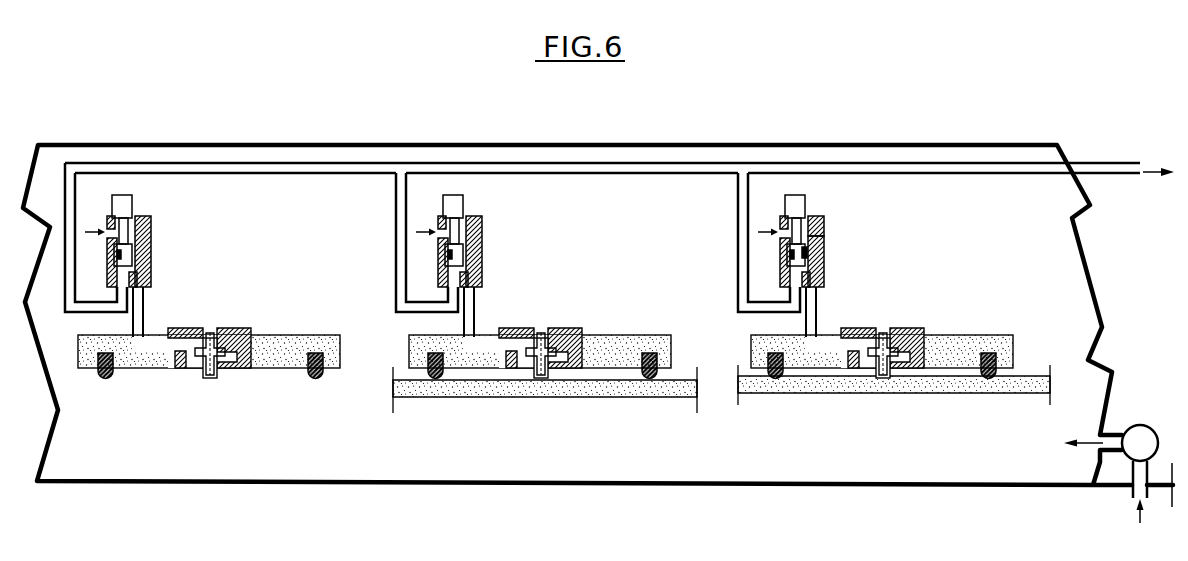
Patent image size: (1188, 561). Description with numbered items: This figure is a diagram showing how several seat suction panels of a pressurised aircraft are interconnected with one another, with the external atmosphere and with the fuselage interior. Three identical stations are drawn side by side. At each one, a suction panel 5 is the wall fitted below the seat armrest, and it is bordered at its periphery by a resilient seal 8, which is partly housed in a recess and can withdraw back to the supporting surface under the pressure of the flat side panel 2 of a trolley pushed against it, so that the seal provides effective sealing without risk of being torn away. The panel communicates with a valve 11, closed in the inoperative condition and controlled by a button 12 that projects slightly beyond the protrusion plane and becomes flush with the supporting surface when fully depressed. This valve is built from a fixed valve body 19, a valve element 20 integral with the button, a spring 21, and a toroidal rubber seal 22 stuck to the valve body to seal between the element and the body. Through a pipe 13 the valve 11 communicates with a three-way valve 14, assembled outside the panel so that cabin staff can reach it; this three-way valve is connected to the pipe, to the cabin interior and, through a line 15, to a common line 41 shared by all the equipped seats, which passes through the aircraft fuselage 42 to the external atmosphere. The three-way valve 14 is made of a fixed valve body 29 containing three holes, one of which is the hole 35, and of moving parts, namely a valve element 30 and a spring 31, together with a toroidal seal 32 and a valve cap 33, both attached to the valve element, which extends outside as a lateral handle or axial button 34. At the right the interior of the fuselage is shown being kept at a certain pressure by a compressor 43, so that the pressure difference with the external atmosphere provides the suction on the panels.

The flat side panel 2 is at (592, 393).
The suction panel 5 is at (283, 343).
The resilient seal 8 is at (313, 378).
The valve 11 is at (556, 357).
The button 12 is at (893, 366).
The pipe 13 is at (813, 305).
The three-way valve 14 is at (495, 236).
The line 15 is at (742, 223).
The fixed valve body 19 is at (848, 335).
The valve element 20 is at (899, 348).
The spring 21 is at (874, 336).
The toroidal rubber seal 22 is at (863, 360).
The fixed valve body 29 is at (824, 279).
The valve element 30 is at (788, 258).
The spring 31 is at (823, 222).
The toroidal seal 32 is at (808, 247).
The valve cap 33 is at (787, 266).
The lateral handle 34 is at (853, 181).
The hole 35 is at (780, 229).
The common line 41 is at (1113, 166).
The housing boundary 42 is at (1096, 283).
The compressor 43 is at (1136, 432).